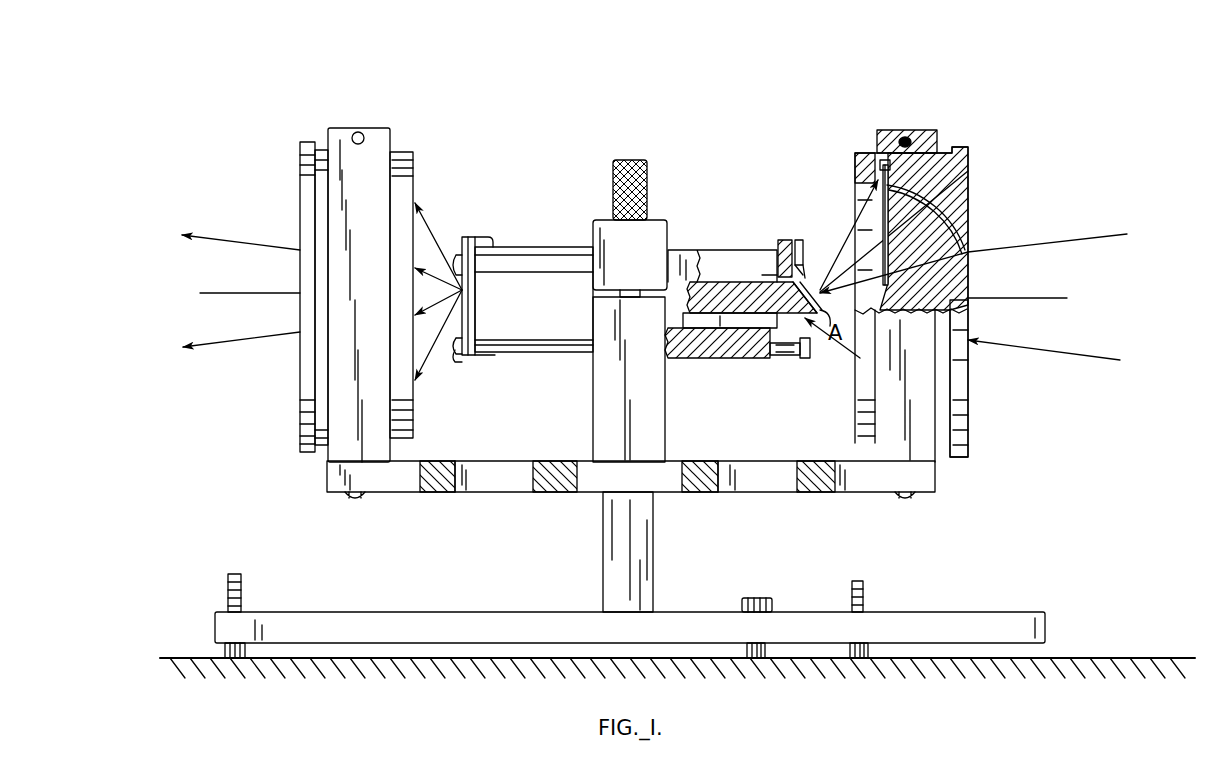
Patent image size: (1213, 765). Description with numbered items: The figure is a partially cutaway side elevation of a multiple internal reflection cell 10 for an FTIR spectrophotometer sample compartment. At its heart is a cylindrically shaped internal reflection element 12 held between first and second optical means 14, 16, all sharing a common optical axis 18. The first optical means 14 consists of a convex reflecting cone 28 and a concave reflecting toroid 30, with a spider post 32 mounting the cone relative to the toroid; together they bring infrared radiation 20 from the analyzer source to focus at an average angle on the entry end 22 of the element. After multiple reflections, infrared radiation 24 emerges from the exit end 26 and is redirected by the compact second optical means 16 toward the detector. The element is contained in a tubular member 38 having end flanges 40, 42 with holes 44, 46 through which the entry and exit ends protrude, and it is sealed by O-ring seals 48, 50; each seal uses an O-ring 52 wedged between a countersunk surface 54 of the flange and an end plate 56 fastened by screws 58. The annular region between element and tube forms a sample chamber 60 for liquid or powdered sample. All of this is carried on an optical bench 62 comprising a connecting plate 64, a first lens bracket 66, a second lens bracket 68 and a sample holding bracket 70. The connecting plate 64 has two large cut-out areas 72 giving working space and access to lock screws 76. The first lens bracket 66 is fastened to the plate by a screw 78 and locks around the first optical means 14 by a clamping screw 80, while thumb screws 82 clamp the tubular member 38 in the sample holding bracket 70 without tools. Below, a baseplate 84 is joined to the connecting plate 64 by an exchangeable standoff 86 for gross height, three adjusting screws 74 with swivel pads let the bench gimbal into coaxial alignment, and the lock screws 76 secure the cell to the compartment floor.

The multiple internal reflection cell 10 is at (666, 62).
The cylindrically shaped internal reflection element 12 is at (720, 268).
The first optical means 14 is at (992, 406).
The second optical means 16 is at (280, 400).
The optical axis 18 is at (215, 294).
The infrared radiation from the source 20 is at (1106, 238).
The entry end 22 is at (809, 293).
The infrared radiation emitted from the exit end 24 is at (240, 243).
The exit end 26 is at (458, 342).
The reflecting cone 28 is at (900, 265).
The reflecting toroid 30 is at (968, 170).
The spider post 32 is at (884, 150).
The tubular member 38 is at (540, 247).
The end flange 40 is at (798, 240).
The end flange 42 is at (478, 238).
The hole 44 is at (775, 281).
The hole 46 is at (458, 268).
The O-ring seal 48 is at (806, 256).
The O-ring seal 50 is at (455, 366).
The O-ring 52 is at (760, 330).
The countersunk surface 54 is at (784, 242).
The end plate 56 is at (808, 252).
The screws 58 is at (800, 345).
The sample chamber 60 is at (696, 272).
The optical bench 62 is at (1108, 513).
The connecting plate 64 is at (405, 492).
The first lens bracket 66 is at (906, 130).
The second lens bracket 68 is at (352, 128).
The sample holding bracket 70 is at (600, 220).
The cut-out areas 72 is at (492, 492).
The adjusting screws 74 is at (238, 575).
The lock screws 76 is at (757, 595).
The screw 78 is at (915, 494).
The clamping screw 80 is at (925, 132).
The thumb screws 82 is at (635, 160).
The baseplate 84 is at (530, 625).
The standoff 86 is at (640, 577).